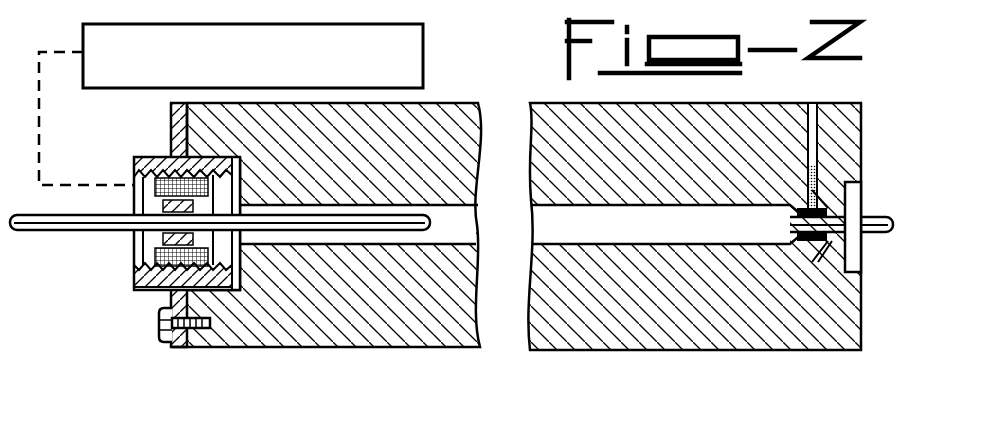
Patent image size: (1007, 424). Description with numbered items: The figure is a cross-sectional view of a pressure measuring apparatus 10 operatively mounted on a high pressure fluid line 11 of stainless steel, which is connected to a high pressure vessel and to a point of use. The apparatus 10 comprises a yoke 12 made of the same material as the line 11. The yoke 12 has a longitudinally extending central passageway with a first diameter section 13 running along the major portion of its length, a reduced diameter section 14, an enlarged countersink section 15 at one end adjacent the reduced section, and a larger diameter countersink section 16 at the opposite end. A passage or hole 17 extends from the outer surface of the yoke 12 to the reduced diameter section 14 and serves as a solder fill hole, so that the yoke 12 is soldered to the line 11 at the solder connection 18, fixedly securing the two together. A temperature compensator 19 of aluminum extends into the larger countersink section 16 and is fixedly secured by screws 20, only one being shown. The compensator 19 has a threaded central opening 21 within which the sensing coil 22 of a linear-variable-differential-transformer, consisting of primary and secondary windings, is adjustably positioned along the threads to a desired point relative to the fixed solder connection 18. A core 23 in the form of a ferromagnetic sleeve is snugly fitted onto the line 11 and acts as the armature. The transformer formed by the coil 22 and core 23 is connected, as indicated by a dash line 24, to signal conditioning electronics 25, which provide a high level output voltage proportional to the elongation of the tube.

The pressure measuring apparatus 10 is at (610, 358).
The high pressure fluid line 11 is at (606, 217).
The yoke 12 is at (369, 330).
The first diameter section 13 is at (458, 244).
The reduced diameter section 14 is at (810, 240).
The enlarged countersink section 15 is at (845, 268).
The larger diameter countersink section 16 is at (238, 172).
The passage or hole 17 is at (810, 130).
The solder connection 18 is at (812, 210).
The temperature compensator 19 is at (172, 335).
The screws 20 is at (200, 335).
The threaded central opening 21 is at (134, 258).
The sensing coil 22 is at (200, 178).
The core 23 is at (165, 206).
The dash line 24 is at (39, 122).
The signal conditioning electronics 25 is at (415, 63).